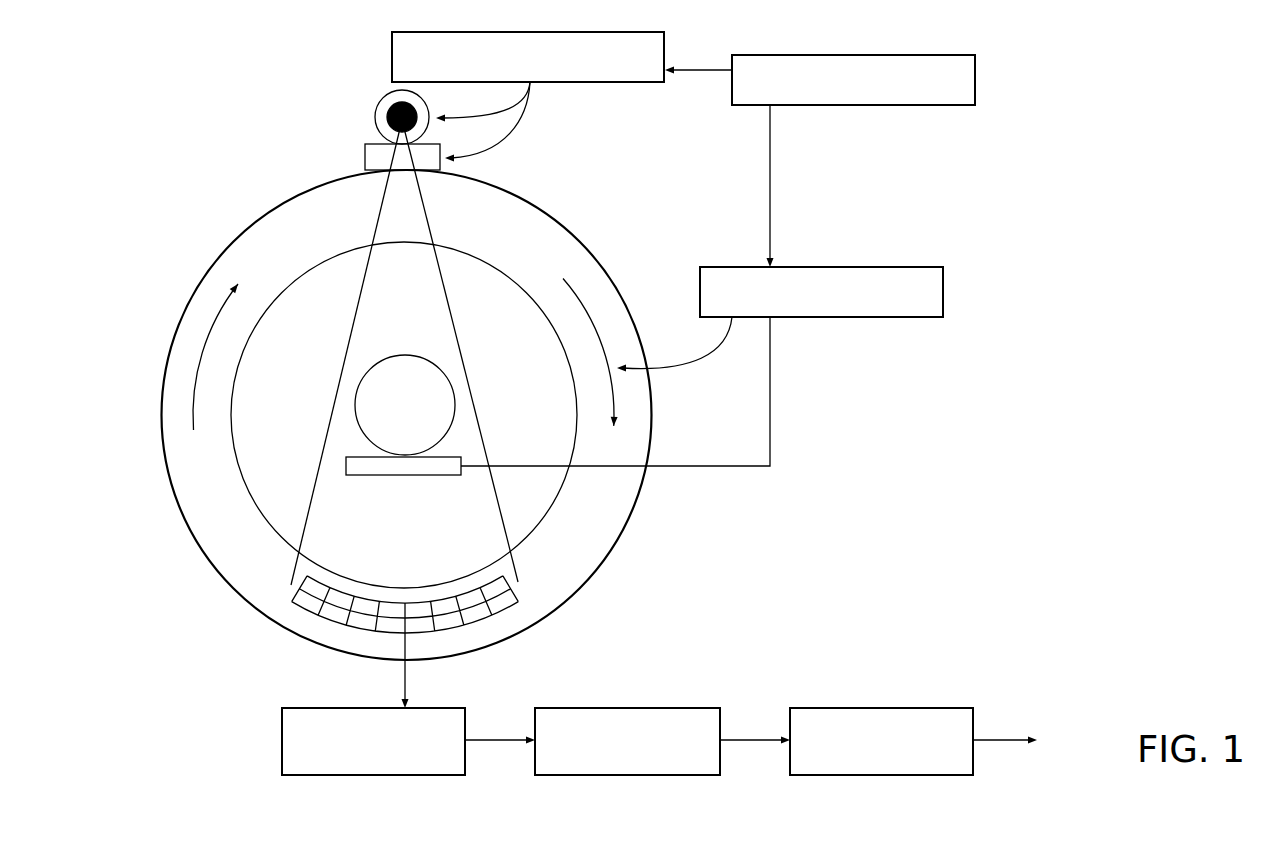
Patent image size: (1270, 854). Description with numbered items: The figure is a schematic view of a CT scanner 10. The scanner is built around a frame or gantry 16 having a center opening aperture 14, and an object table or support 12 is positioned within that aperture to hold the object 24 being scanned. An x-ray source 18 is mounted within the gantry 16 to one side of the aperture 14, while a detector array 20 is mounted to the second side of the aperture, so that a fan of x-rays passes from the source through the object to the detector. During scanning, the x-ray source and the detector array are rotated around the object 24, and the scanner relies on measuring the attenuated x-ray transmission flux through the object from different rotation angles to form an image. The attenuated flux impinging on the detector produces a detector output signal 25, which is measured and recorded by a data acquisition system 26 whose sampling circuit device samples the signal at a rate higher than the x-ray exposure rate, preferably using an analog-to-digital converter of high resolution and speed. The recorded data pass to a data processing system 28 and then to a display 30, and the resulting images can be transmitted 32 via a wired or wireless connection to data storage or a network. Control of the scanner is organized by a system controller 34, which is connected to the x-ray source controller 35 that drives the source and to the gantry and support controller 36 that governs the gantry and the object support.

The CT scanner 10 is at (214, 196).
The object table or support 12 is at (405, 477).
The center opening aperture 14 is at (268, 468).
The frame or gantry 16 is at (543, 213).
The x-ray source 18 is at (375, 117).
The detector array 20 is at (302, 613).
The object 24 is at (394, 418).
The detector output signal 25 is at (407, 680).
The data acquisition system 26 is at (372, 777).
The data processing system 28 is at (628, 777).
The display 30 is at (884, 777).
The image transmission 32 is at (1004, 742).
The system controller 34 is at (930, 106).
The x-ray source controller 35 is at (618, 83).
The gantry and support controller 36 is at (902, 318).